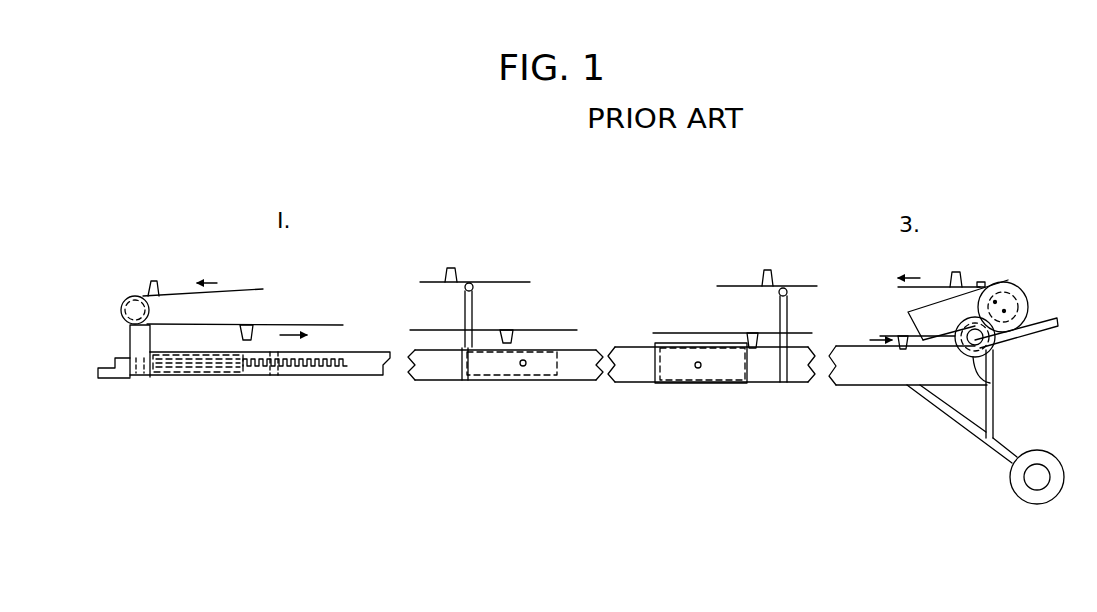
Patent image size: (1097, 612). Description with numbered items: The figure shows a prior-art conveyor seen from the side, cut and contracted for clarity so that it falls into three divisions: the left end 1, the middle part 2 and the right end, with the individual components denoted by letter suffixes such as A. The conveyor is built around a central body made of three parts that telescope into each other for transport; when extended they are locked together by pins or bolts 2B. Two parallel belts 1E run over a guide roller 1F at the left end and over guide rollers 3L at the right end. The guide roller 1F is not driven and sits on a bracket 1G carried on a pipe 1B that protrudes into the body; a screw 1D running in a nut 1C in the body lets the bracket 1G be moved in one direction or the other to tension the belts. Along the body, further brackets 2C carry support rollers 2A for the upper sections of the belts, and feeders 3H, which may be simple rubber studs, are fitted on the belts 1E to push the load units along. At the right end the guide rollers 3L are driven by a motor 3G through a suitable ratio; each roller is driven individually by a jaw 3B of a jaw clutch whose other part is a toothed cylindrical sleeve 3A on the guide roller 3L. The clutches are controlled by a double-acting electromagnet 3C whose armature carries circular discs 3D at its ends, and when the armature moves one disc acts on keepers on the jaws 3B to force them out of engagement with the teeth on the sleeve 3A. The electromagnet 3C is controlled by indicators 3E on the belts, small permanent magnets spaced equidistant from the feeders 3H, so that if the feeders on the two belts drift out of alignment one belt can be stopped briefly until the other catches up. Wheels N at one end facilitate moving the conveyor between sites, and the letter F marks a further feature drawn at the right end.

The end 1 is at (365, 376).
The pipe 1B is at (180, 376).
The nut 1C is at (270, 377).
The screw 1D is at (322, 374).
The belts 1E is at (243, 290).
The guide roller 1F is at (122, 310).
The bracket 1G is at (130, 342).
The belt drive A is at (125, 299).
The middle part 2 is at (565, 300).
The support rollers 2A is at (472, 283).
The pins or bolts 2B is at (522, 367).
The brackets 2C is at (473, 315).
The cylindrical sleeve 3A is at (1007, 313).
The jaws 3B is at (1010, 325).
The double-acting electromagnet 3C is at (963, 342).
The circular discs 3D is at (990, 383).
The indicators 3E is at (985, 282).
The motor 3G is at (920, 319).
The feeders 3H is at (958, 270).
The guide rollers 3L is at (1007, 297).
The sheet / film F is at (920, 289).
The wheels N is at (1037, 504).